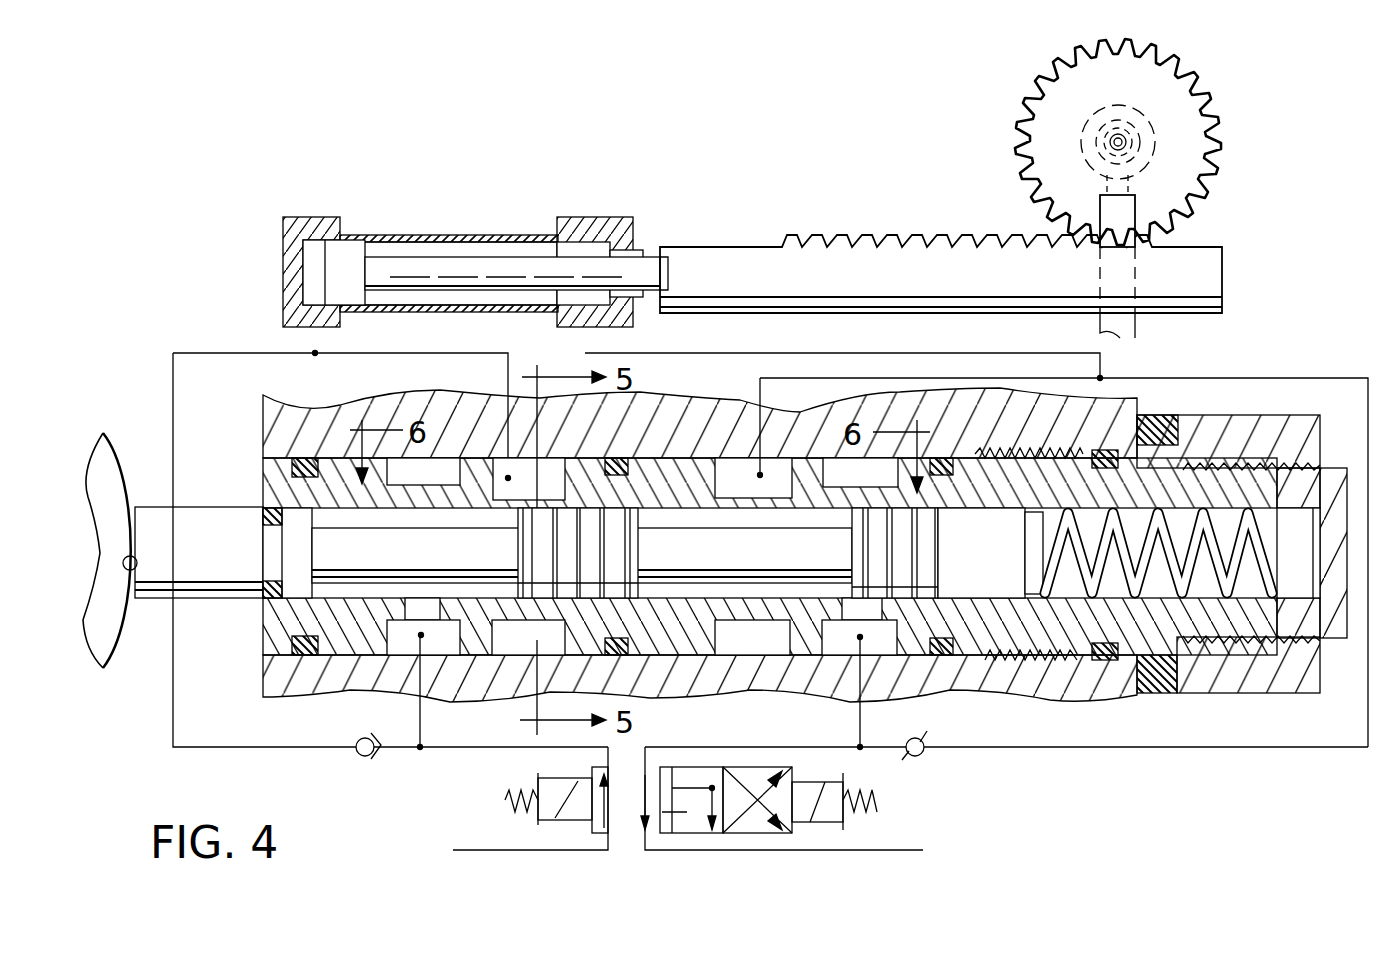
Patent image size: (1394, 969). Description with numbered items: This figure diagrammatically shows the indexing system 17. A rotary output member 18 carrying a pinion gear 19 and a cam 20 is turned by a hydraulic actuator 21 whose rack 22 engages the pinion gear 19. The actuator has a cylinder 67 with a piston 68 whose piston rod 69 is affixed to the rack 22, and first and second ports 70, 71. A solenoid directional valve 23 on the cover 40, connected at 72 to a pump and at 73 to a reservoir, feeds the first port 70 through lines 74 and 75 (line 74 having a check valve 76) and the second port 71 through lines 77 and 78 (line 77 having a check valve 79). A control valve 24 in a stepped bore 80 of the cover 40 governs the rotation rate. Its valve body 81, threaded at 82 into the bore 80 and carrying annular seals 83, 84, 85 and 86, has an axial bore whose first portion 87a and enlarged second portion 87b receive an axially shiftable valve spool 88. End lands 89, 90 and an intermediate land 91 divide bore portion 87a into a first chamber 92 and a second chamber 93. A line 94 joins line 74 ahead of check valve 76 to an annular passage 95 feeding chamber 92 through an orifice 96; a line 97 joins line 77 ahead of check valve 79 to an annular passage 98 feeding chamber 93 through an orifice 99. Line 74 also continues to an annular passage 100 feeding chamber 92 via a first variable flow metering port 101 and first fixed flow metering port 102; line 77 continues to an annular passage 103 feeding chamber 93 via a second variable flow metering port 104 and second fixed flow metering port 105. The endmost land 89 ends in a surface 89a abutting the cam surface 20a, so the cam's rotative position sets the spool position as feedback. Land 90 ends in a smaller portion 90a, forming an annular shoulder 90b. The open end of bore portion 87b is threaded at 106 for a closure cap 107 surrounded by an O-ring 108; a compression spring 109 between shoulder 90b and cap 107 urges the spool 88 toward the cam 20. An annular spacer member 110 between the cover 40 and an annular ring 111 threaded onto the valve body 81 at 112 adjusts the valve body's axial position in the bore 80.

The indexing system 17 is at (1272, 275).
The rotary output member 18 is at (1104, 95).
The pinion gear 19 is at (1175, 112).
The cam 20 is at (110, 477).
The cam surface 20a is at (120, 643).
The hydraulic actuator 21 is at (350, 232).
The rack 22 is at (745, 262).
The directional valve 23 is at (787, 763).
The control valve 24 is at (1158, 685).
The cover 40 is at (668, 408).
The cylinder 67 is at (447, 238).
The piston 68 is at (388, 240).
The piston rod 69 is at (540, 262).
The first port 70 is at (313, 342).
The second port 71 is at (585, 297).
The pump connection 72 is at (480, 848).
The reservoir connection 73 is at (878, 850).
The line 74 is at (445, 755).
The line 75 is at (315, 277).
The check valve 76 is at (358, 757).
The line 77 is at (1027, 749).
The line 78 is at (788, 353).
The check valve 79 is at (925, 753).
The bore 80 is at (797, 655).
The valve body 81 is at (1005, 665).
The threaded engagement 82 is at (1030, 660).
The annular seal 83 is at (295, 645).
The annular seal 84 is at (608, 652).
The annular seal 85 is at (958, 662).
The annular seal 86 is at (1110, 695).
The first bore portion 87a is at (493, 677).
The second bore portion 87b is at (1207, 612).
The valve spool 88 is at (651, 561).
The land 89 is at (1100, 183).
The spool end surface 89a is at (137, 573).
The land 90 is at (964, 574).
The reduced-diameter portion 90a is at (1040, 540).
The annular shoulder 90b is at (1005, 460).
The intermediate land 91 is at (538, 548).
The first chamber 92 is at (340, 586).
The second chamber 93 is at (727, 612).
The line 94 is at (415, 760).
The annular passage 95 is at (448, 478).
The orifice 96 is at (415, 623).
The line 97 is at (860, 730).
The annular passage 98 is at (878, 665).
The orifice 99 is at (848, 603).
The annular passage 100 is at (540, 470).
The first variable flow metering port 101 is at (560, 503).
The first fixed flow metering port 102 is at (508, 512).
The annular passage 103 is at (783, 470).
The second variable flow metering port 104 is at (750, 510).
The second fixed flow metering port 105 is at (768, 510).
The threads 106 is at (1302, 690).
The closure cap 107 is at (1330, 642).
The O-ring 108 is at (1332, 470).
The compression spring 109 is at (1170, 540).
The annular spacer member 110 is at (1145, 415).
The annular ring 111 is at (1240, 415).
The threaded engagement 112 is at (1292, 468).